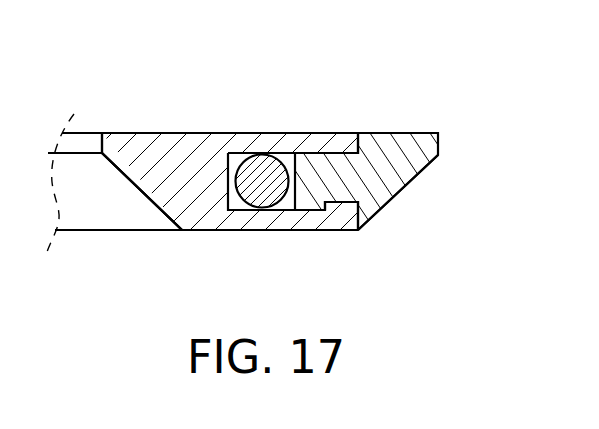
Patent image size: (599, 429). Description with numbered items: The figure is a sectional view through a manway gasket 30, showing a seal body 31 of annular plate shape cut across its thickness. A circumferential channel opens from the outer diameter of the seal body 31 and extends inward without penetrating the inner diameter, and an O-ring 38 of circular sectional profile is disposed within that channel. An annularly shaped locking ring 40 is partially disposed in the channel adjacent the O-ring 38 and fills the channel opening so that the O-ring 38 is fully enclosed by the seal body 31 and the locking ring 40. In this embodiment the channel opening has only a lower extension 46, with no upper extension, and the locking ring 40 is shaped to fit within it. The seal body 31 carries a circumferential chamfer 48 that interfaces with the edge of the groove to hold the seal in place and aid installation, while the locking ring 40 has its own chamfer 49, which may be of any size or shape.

The manway gasket 30 is at (110, 83).
The seal body 31 is at (187, 157).
The O-ring 38 is at (262, 172).
The locking ring 40 is at (373, 160).
The lower extension 46 is at (345, 210).
The circumferential chamfer 48 is at (142, 192).
The chamfer 49 is at (408, 185).